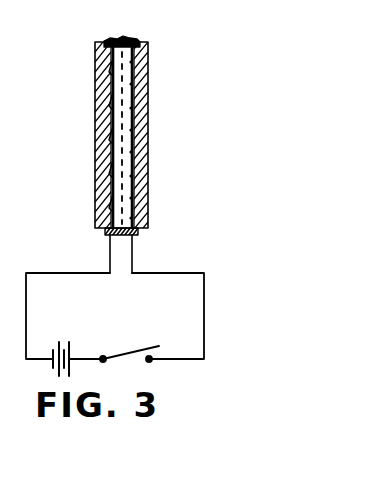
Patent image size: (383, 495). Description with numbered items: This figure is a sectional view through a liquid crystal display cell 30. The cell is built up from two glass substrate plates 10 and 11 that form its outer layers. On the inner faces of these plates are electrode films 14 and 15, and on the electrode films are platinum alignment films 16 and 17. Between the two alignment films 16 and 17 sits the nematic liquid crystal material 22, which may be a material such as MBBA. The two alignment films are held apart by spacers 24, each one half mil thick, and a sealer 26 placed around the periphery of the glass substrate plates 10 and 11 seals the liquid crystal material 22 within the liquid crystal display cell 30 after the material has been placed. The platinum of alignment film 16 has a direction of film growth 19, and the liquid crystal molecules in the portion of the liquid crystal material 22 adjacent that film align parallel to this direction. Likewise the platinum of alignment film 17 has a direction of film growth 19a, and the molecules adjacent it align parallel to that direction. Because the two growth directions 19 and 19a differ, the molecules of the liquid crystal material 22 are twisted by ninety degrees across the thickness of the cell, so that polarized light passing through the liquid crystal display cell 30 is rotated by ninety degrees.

The glass substrate plate 10 is at (95, 82).
The glass substrate plate 11 is at (142, 76).
The electrode film 14 is at (110, 153).
The electrode film 15 is at (133, 129).
The platinum alignment film 16 is at (115, 190).
The platinum alignment film 17 is at (134, 101).
The direction of platinum film growth 19 is at (111, 115).
The direction of platinum film growth 19a is at (134, 170).
The nematic liquid crystal material 22 is at (133, 63).
The spacers 24 is at (97, 48).
The sealer 26 is at (124, 37).
The liquid crystal display cell 30 is at (170, 197).